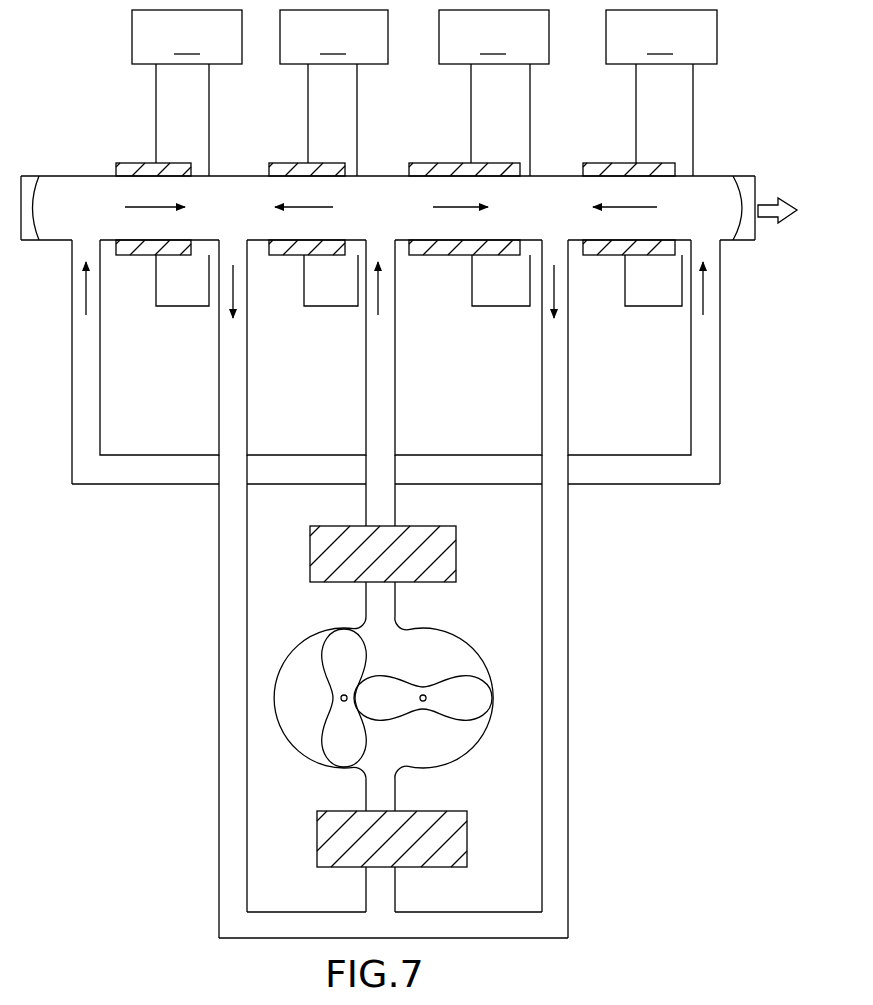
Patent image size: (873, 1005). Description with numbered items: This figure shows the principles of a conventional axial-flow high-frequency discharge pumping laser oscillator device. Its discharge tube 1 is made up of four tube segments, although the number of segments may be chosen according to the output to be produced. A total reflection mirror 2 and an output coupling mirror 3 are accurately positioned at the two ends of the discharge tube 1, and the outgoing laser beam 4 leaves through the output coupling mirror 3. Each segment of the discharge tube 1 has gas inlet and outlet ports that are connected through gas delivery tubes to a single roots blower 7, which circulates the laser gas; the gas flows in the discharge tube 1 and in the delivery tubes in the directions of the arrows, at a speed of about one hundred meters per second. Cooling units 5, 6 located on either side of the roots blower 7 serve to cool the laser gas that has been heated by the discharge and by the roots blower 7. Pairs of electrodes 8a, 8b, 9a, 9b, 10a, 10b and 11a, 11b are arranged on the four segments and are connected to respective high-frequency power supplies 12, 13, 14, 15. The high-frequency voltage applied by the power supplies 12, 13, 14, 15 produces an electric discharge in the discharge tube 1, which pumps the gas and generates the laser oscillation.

The discharge tube 1 is at (73, 176).
The total reflection mirror 2 is at (37, 241).
The output coupling mirror 3 is at (745, 242).
The outgoing laser beam 4 is at (763, 203).
The cooling unit 5 is at (457, 552).
The cooling unit 6 is at (467, 837).
The roots blower 7 is at (494, 697).
The electrode 8a is at (151, 153).
The electrode 8b is at (162, 273).
The electrode 9a is at (307, 153).
The electrode 9b is at (306, 273).
The electrode 10a is at (462, 153).
The electrode 10b is at (466, 273).
The electrode 11a is at (629, 153).
The electrode 11b is at (629, 273).
The high-frequency power supply 12 is at (187, 93).
The high-frequency power supply 13 is at (334, 93).
The high-frequency power supply 14 is at (494, 93).
The high-frequency power supply 15 is at (661, 93).